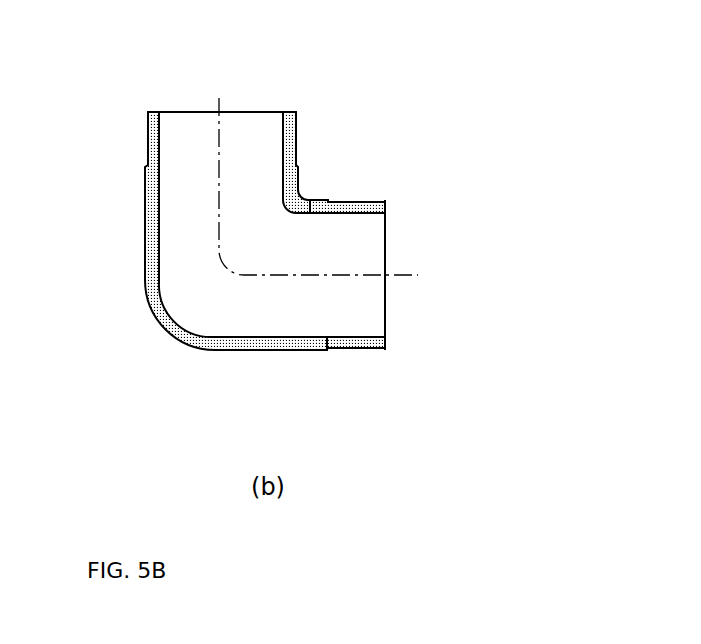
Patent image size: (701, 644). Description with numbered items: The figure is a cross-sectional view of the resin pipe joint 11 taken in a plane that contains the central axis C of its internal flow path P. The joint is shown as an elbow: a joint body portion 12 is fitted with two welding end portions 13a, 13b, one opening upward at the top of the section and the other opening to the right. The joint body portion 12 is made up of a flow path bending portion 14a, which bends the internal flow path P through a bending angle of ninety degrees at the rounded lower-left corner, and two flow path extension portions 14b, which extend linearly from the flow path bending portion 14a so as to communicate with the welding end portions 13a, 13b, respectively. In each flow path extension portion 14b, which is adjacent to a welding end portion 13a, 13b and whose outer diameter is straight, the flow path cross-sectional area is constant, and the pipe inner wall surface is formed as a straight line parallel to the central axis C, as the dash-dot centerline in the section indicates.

The resin pipe joint 11 is at (327, 253).
The joint body portion 12 is at (265, 405).
The welding end portion 13a is at (290, 112).
The welding end portion 13b is at (387, 212).
The flow path bending portion 14a is at (265, 350).
The flow path extension portion 14b is at (352, 350).
The central axis C is at (332, 193).
The internal flow path P is at (238, 320).